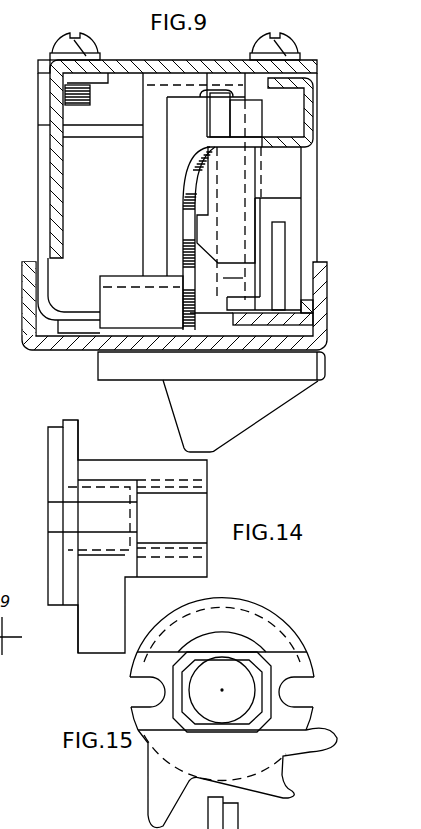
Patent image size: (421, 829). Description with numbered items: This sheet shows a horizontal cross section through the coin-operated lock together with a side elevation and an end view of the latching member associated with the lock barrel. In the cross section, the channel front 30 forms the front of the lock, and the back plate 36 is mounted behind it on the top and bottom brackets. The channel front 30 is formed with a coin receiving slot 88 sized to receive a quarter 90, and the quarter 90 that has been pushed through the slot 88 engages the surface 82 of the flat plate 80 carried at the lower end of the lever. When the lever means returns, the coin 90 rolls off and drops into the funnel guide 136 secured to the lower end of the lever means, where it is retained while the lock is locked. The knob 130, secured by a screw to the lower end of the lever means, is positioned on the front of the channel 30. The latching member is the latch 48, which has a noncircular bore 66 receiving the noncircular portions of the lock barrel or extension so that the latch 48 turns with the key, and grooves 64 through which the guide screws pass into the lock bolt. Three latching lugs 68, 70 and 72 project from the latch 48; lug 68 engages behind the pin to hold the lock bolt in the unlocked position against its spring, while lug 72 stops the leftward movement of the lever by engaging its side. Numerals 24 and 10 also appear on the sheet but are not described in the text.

In FIG. 9, the back plate 36 is at (178, 63).
In FIG. 9, the funnel guide 136 is at (173, 150).
In FIG. 9, the quarter 90 is at (180, 197).
In FIG. 9, the surface 82 is at (200, 222).
In FIG. 9, the flat plate 80 is at (288, 173).
In FIG. 9, the coin receiving slot 88 is at (130, 338).
In FIG. 9, the channel front 30 is at (300, 335).
In FIG. 9, the knob 130 is at (184, 403).
In FIG. 14, the latch 48 is at (86, 445).
In FIG. 15, the latch 48 is at (280, 598).
In FIG. 14, the grooves 64 is at (68, 505).
In FIG. 15, the grooves 64 is at (144, 680).
In FIG. 14, the noncircular bore 66 is at (200, 488).
In FIG. 15, the noncircular bore 66 is at (208, 652).
In FIG. 14, the latching lug 72 is at (88, 647).
In FIG. 15, the latching lug 72 is at (155, 796).
In FIG. 14, the frame 24 is at (8, 494).
In FIG. 15, the latching lug 68 is at (313, 752).
In FIG. 15, the latching lug 70 is at (288, 794).
In FIG. 15, the device 10 is at (250, 813).